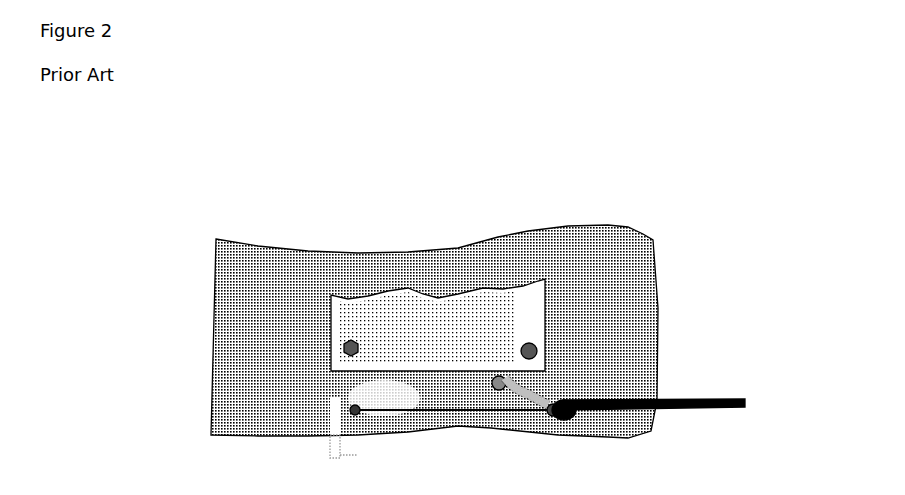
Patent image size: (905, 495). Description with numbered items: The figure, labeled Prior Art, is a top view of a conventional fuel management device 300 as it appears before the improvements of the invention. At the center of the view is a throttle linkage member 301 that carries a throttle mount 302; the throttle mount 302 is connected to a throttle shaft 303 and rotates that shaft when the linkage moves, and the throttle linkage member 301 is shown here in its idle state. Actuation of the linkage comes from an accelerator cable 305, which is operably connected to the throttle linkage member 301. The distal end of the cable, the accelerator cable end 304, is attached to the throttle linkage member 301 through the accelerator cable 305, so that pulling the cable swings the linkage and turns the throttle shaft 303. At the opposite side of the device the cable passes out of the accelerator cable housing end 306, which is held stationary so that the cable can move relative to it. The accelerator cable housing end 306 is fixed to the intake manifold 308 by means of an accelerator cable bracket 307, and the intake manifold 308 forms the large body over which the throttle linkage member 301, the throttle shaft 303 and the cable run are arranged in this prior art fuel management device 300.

The fuel management device 300 is at (415, 302).
The throttle linkage member 301 is at (362, 390).
The throttle mount 302 is at (360, 373).
The throttle shaft 303 is at (372, 360).
The accelerator cable end 304 is at (342, 400).
The accelerator cable 305 is at (450, 405).
The accelerator cable housing end 306 is at (567, 392).
The accelerator cable bracket 307 is at (596, 314).
The intake manifold 308 is at (303, 307).